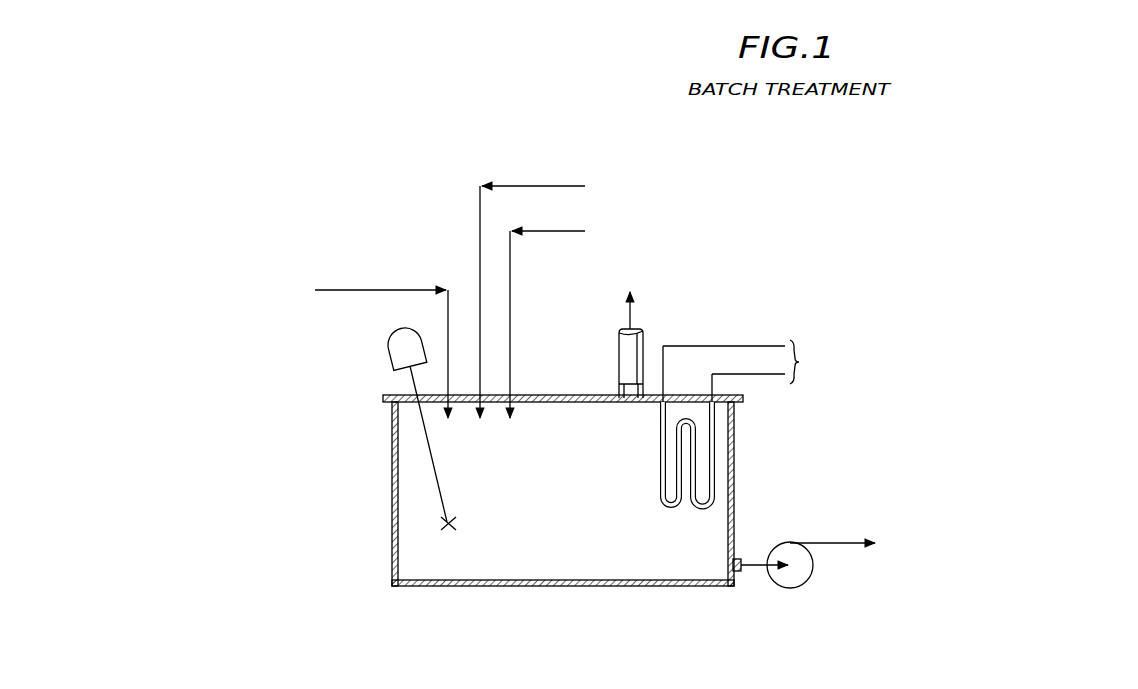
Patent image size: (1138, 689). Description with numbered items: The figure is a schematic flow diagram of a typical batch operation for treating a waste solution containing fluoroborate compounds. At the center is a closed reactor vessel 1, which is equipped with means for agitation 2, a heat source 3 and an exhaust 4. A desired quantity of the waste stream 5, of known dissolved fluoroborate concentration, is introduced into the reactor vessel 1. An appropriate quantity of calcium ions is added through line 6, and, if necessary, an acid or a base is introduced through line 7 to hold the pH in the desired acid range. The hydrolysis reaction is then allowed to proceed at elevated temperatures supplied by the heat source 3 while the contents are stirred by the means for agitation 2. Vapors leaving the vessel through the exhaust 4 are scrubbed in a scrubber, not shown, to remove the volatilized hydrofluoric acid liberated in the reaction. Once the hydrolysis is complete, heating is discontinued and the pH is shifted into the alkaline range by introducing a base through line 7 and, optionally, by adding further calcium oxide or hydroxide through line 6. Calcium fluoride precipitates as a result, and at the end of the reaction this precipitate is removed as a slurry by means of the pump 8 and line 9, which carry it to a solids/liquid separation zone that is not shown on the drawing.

The closed reactor vessel 1 is at (392, 548).
The means for agitation 2 is at (436, 471).
The heat source 3 is at (765, 346).
The exhaust 4 is at (618, 346).
The waste stream 5 is at (315, 290).
The calcium ion line 6 is at (526, 163).
The acid or base line 7 is at (510, 269).
The pump 8 is at (783, 587).
The slurry line 9 is at (838, 520).